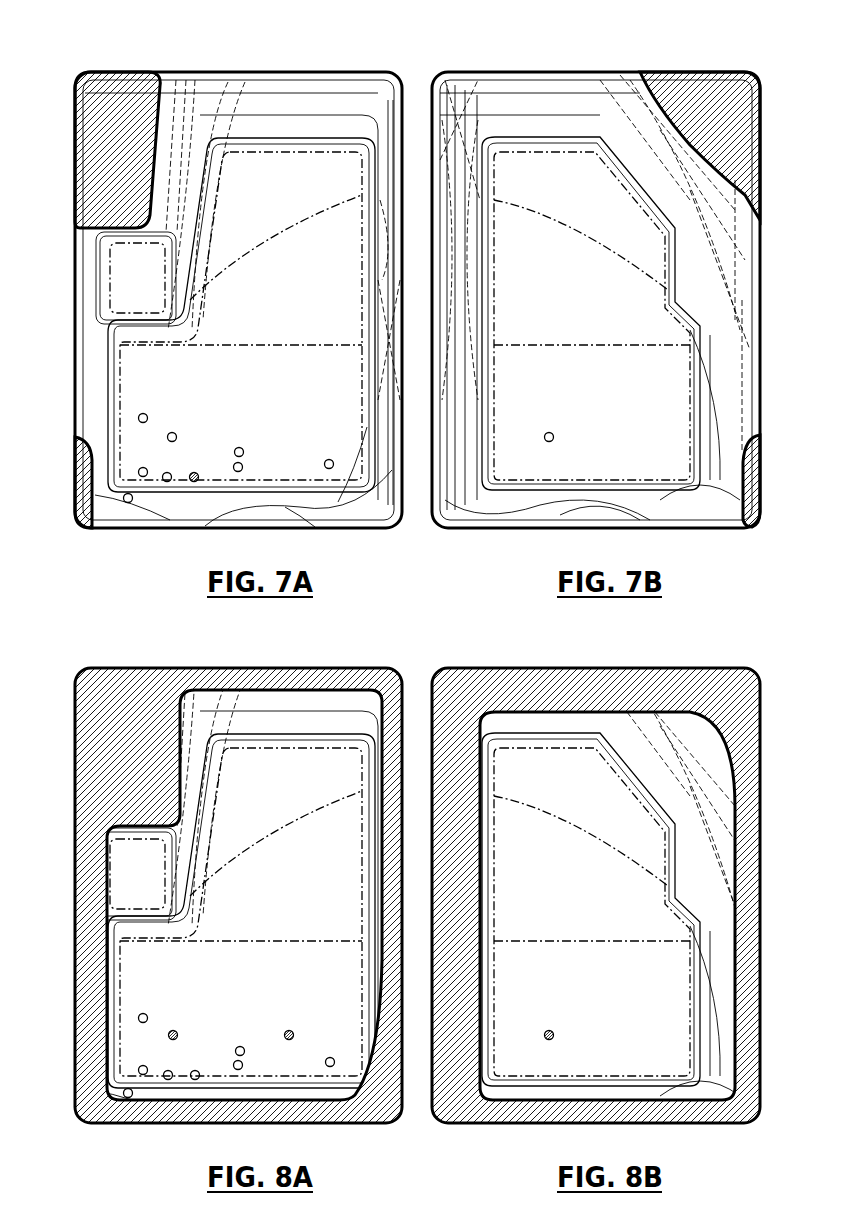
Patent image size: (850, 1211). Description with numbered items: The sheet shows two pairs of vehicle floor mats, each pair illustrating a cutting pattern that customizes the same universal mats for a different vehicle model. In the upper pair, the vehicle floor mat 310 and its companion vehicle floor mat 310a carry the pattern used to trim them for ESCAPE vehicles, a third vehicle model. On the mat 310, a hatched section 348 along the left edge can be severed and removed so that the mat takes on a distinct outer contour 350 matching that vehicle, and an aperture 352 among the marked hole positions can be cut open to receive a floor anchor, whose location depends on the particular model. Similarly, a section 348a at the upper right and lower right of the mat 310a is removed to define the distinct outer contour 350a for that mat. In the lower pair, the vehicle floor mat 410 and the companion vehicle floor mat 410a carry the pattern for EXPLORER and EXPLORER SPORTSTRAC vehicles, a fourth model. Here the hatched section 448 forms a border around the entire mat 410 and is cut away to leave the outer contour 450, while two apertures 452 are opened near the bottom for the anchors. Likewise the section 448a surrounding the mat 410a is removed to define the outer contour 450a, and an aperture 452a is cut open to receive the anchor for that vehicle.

In FIG. 7A, the vehicle floor mat 310 is at (353, 50).
In FIG. 7B, the vehicle floor mat 310a is at (680, 50).
In FIG. 7A, the section 348 is at (97, 78).
In FIG. 7B, the section 348a is at (753, 127).
In FIG. 7A, the outer contour 350 is at (75, 273).
In FIG. 7B, the outer contour 350a is at (760, 253).
In FIG. 7A, the aperture 352 is at (195, 476).
In FIG. 8A, the vehicle floor mat 410 is at (327, 653).
In FIG. 8B, the vehicle floor mat 410a is at (690, 653).
In FIG. 8A, the section 448 is at (90, 730).
In FIG. 8B, the section 448a is at (757, 740).
In FIG. 8A, the outer contour 450 is at (100, 915).
In FIG. 8B, the outer contour 450a is at (737, 877).
In FIG. 8A, the aperture 452 is at (290, 1035).
In FIG. 8B, the aperture 452a is at (557, 1035).